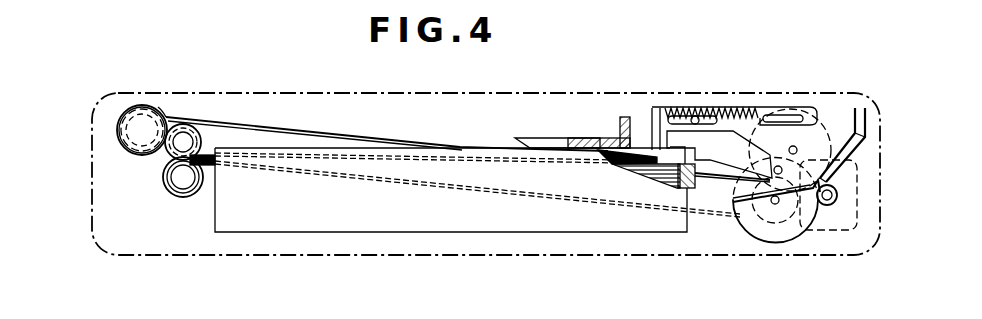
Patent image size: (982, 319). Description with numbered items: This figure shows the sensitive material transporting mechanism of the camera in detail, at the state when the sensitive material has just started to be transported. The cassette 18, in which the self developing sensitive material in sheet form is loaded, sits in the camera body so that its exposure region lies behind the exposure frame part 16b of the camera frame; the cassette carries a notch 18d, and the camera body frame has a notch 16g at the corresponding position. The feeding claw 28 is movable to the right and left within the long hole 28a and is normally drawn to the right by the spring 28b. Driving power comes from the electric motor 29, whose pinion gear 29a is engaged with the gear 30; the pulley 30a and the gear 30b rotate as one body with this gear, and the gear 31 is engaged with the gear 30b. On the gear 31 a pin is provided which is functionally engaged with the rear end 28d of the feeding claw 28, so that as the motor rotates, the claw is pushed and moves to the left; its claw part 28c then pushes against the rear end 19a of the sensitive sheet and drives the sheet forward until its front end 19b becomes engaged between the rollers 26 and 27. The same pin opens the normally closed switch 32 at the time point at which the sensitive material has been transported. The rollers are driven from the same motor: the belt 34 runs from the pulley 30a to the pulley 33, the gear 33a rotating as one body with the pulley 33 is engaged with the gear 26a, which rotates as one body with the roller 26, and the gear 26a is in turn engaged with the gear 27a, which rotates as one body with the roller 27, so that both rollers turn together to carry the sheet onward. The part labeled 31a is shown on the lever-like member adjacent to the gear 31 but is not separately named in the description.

The exposure frame part of the frame of the camera body 16b is at (553, 138).
The notch of the frame 16g is at (640, 140).
The cassette 18 is at (395, 232).
The notch in the cassette 18d is at (622, 125).
The rear end of the sensitive material 19a is at (612, 157).
The front end of the sensitive material 19b is at (205, 158).
The roller 26 is at (183, 140).
The gear 26a is at (172, 130).
The roller 27 is at (183, 182).
The gear 27a is at (170, 186).
The feeding claw 28 is at (748, 112).
The long hole 28a is at (792, 110).
The spring 28b is at (695, 118).
The claw part 28c is at (658, 115).
The rear end of the feeding claw 28d is at (797, 148).
The electric motor 29 is at (845, 188).
The pinion gear 29a is at (836, 204).
The gear 30 is at (802, 235).
The pulley 30a is at (778, 226).
The gear 30b is at (770, 212).
The gear 31 is at (835, 165).
The lever end 31a is at (840, 167).
The normally closed switch 32 is at (863, 142).
The pulley 33 is at (140, 138).
The gear 33a is at (120, 123).
The belt 34 is at (330, 137).